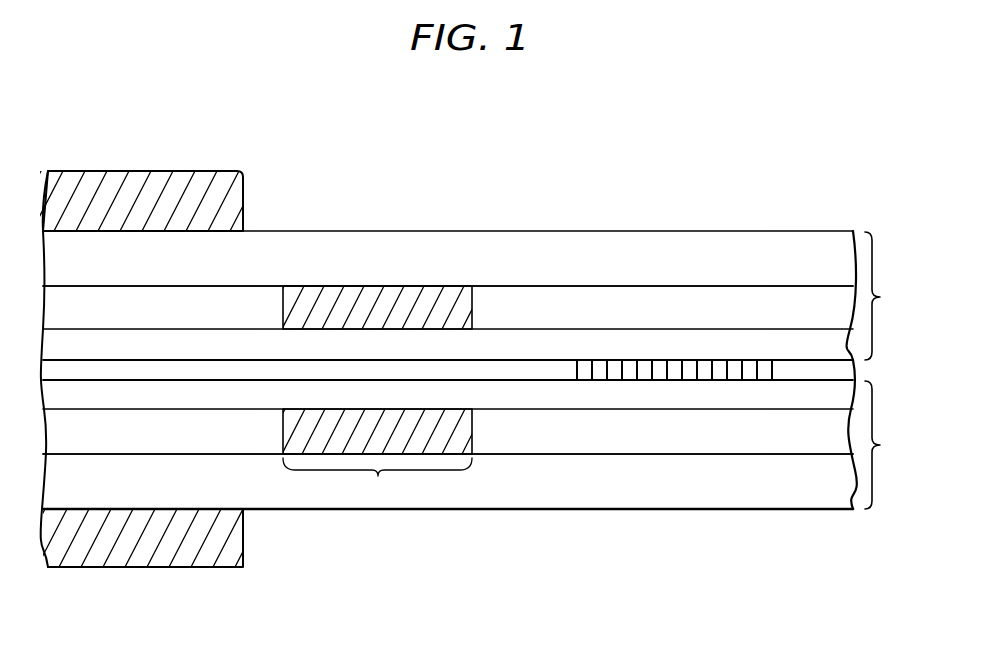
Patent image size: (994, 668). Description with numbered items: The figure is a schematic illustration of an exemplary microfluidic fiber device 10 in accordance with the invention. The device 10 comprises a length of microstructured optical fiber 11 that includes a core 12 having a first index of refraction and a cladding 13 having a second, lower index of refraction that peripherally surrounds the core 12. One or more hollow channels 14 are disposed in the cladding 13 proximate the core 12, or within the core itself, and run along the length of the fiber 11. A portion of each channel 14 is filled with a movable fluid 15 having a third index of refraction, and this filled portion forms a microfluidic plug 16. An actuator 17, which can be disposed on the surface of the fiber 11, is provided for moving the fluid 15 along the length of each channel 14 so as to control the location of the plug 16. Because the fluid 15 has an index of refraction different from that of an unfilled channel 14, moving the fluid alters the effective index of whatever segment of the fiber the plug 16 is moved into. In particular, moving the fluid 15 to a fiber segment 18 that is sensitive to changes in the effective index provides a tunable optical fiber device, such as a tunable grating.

The microfluidic fiber device 10 is at (319, 127).
The microstructured optical fiber 11 is at (593, 512).
The core 12 is at (857, 373).
The cladding 13 is at (889, 370).
The hollow channel 14 is at (578, 286).
The movable fluid 15 is at (392, 286).
The microfluidic plug 16 is at (378, 476).
The actuator 17 is at (133, 171).
The fiber segment 18 is at (755, 380).